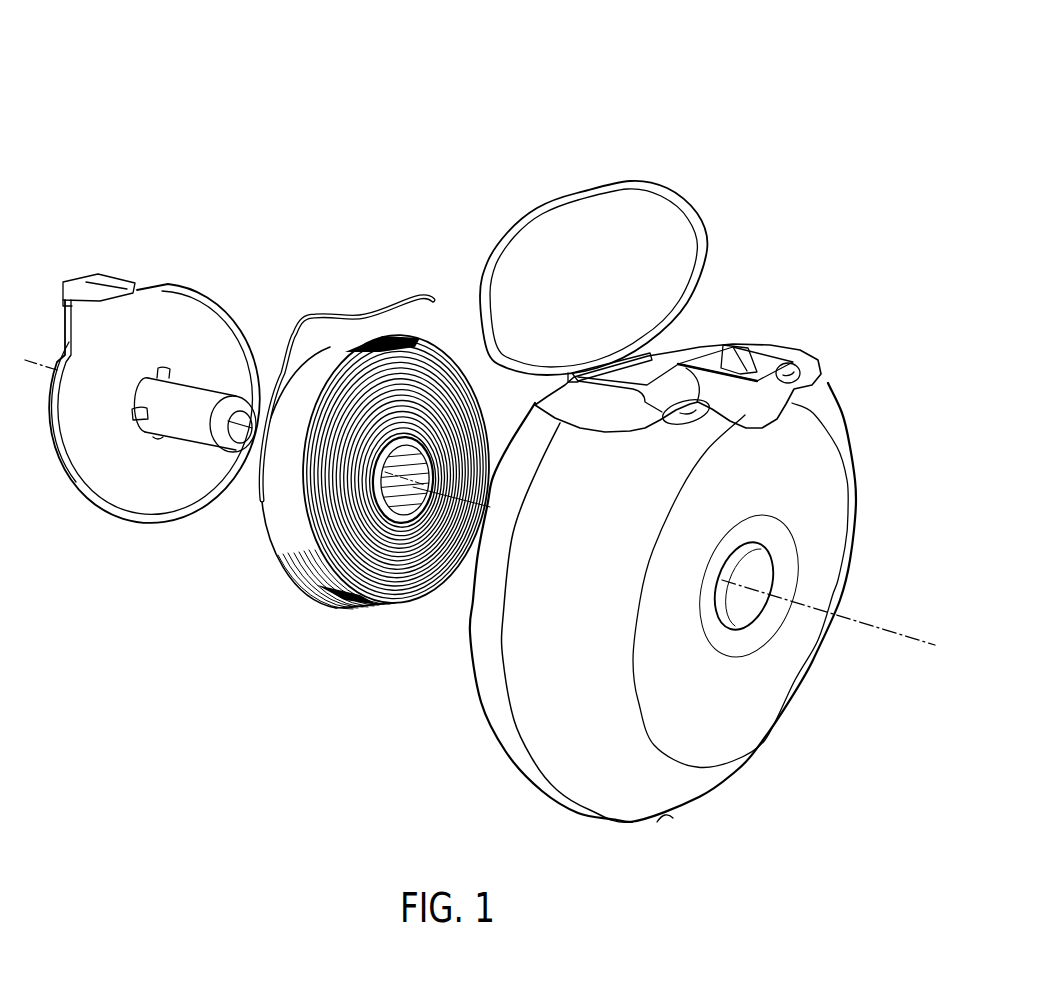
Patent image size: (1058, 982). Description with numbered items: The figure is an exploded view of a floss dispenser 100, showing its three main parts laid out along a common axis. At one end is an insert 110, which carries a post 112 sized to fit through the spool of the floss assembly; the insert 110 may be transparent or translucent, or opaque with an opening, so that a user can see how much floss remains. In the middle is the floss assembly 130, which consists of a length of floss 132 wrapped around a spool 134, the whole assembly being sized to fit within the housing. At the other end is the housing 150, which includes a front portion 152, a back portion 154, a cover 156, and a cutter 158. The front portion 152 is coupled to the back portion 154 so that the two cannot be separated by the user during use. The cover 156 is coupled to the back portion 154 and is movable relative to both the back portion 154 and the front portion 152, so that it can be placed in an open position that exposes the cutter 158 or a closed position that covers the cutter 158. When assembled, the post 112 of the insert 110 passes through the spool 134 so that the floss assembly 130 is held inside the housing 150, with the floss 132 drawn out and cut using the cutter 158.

The floss dispenser 100 is at (245, 72).
The insert 110 is at (121, 243).
The post 112 is at (180, 430).
The floss assembly 130 is at (343, 295).
The floss 132 is at (278, 538).
The spool 134 is at (397, 517).
The housing 150 is at (774, 257).
The front portion 152 is at (822, 386).
The back portion 154 is at (475, 652).
The cover 156 is at (590, 182).
The cutter 158 is at (735, 345).